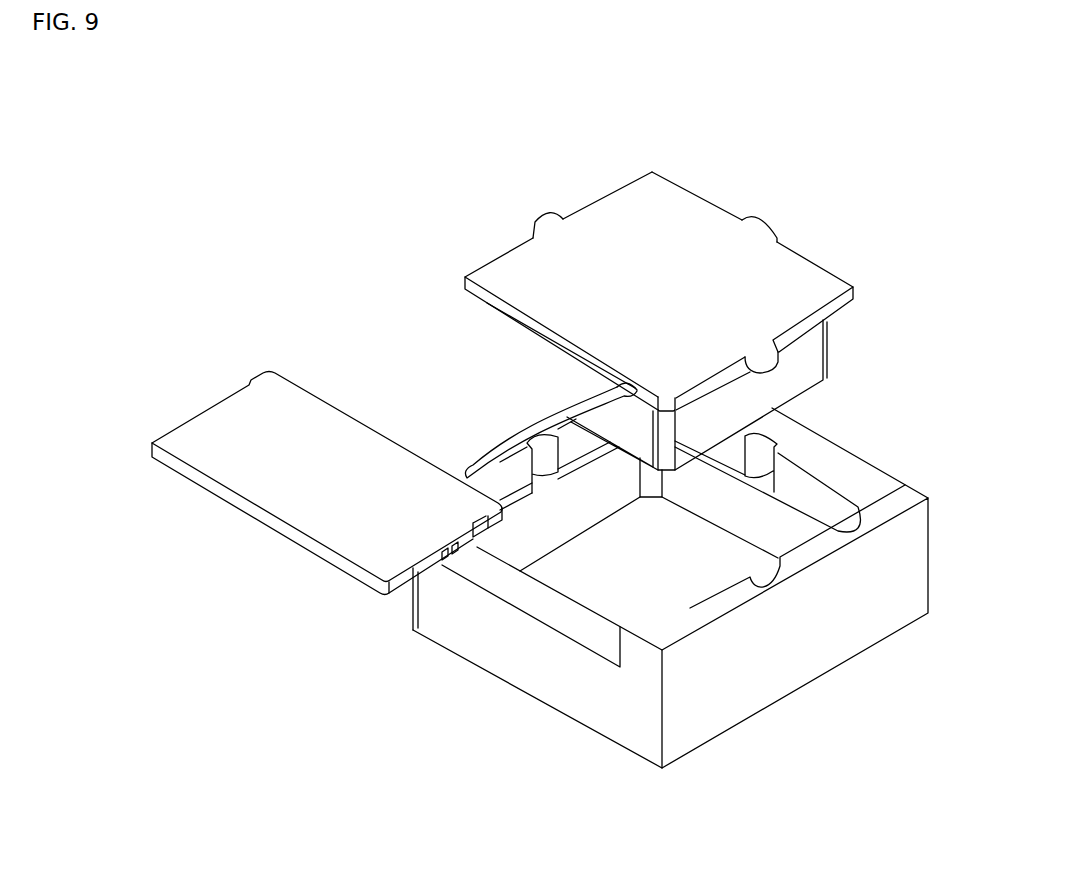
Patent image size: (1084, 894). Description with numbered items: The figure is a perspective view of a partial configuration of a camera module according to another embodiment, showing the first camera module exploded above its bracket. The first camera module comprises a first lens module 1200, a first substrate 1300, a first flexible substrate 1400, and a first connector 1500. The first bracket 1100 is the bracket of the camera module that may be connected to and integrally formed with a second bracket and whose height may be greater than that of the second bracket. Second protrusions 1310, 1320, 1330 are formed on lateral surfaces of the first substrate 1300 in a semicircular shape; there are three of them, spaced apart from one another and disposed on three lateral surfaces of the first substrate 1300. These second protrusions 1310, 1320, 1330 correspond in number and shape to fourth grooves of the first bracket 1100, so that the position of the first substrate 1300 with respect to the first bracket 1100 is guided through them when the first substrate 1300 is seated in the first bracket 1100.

The first bracket 1100 is at (867, 458).
The first lens module 1200 is at (813, 362).
The first substrate 1300 is at (693, 255).
The second protrusion 1310 is at (543, 223).
The second protrusion 1320 is at (768, 222).
The second protrusion 1330 is at (777, 347).
The first flexible substrate 1400 is at (452, 353).
The first connector 1500 is at (240, 412).